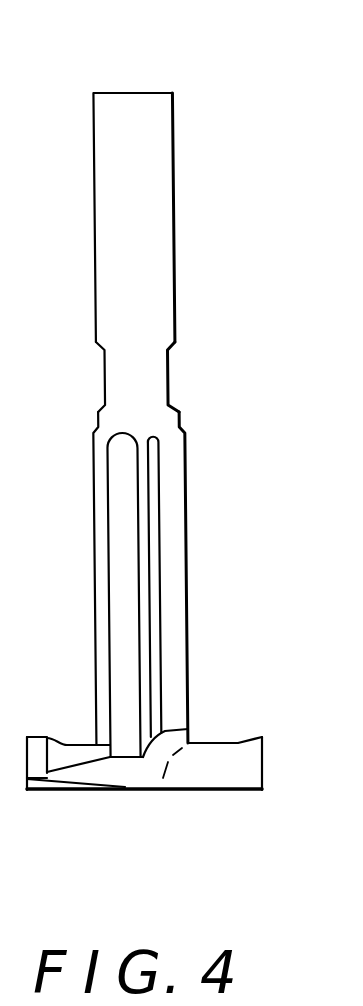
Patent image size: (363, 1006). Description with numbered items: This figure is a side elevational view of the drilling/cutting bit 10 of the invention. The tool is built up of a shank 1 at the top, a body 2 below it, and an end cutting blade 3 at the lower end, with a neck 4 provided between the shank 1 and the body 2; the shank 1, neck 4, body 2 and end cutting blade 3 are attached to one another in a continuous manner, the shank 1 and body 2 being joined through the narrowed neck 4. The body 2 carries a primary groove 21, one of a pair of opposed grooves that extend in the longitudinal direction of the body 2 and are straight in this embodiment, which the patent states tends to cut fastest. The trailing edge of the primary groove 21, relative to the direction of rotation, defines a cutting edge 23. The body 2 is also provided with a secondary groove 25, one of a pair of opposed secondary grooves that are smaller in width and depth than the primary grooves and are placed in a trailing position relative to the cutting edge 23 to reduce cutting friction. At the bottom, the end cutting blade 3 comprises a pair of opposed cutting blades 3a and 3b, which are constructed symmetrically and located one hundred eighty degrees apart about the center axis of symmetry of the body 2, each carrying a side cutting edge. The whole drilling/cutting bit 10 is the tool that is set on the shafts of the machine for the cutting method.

The drilling/cutting bit 10 is at (248, 47).
The shank 1 is at (199, 93).
The neck 4 is at (201, 349).
The body 2 is at (148, 584).
The primary groove 21 is at (117, 472).
The cutting edge 23 is at (135, 555).
The secondary groove 25 is at (156, 620).
The end cutting blade 3 is at (263, 756).
The cutting blade 3a is at (63, 758).
The cutting blade 3b is at (212, 773).